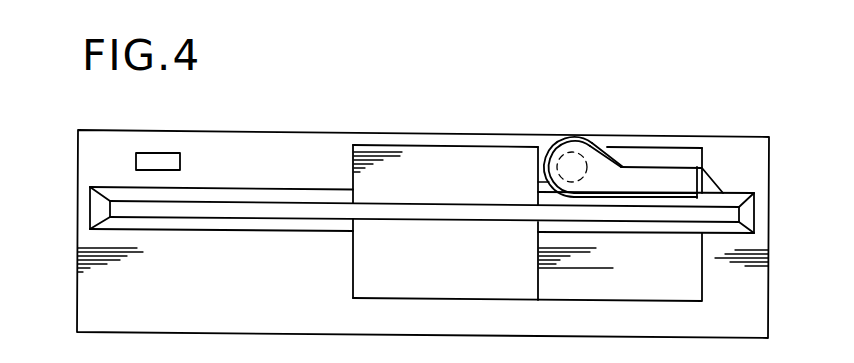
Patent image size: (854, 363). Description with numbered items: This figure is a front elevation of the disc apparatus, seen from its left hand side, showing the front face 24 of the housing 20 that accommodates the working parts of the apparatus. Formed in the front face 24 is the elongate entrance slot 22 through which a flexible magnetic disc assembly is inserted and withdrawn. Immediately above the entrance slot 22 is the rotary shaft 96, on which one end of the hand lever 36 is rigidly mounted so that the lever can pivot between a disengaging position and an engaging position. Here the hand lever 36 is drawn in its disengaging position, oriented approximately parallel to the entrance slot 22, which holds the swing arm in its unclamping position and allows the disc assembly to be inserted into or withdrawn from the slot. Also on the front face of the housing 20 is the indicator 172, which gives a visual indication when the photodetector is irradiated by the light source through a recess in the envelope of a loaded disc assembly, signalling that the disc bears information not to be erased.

The housing 20 is at (714, 134).
The entrance slot 22 is at (257, 207).
The front face 24 is at (287, 289).
The hand lever 36 is at (653, 182).
The rotary shaft 96 is at (566, 153).
The indicator 172 is at (182, 163).